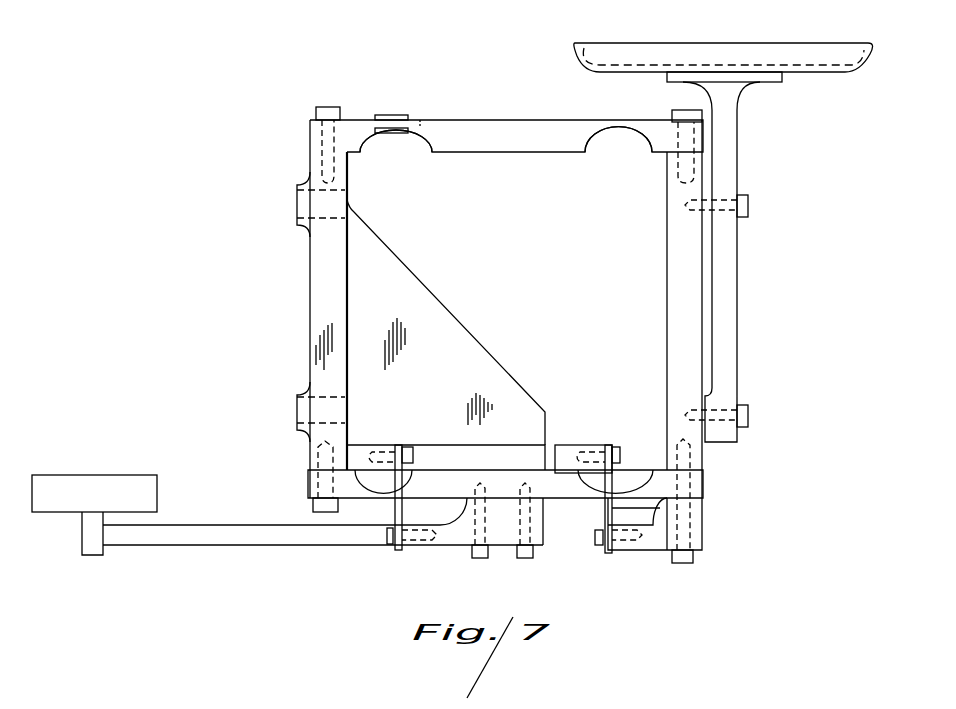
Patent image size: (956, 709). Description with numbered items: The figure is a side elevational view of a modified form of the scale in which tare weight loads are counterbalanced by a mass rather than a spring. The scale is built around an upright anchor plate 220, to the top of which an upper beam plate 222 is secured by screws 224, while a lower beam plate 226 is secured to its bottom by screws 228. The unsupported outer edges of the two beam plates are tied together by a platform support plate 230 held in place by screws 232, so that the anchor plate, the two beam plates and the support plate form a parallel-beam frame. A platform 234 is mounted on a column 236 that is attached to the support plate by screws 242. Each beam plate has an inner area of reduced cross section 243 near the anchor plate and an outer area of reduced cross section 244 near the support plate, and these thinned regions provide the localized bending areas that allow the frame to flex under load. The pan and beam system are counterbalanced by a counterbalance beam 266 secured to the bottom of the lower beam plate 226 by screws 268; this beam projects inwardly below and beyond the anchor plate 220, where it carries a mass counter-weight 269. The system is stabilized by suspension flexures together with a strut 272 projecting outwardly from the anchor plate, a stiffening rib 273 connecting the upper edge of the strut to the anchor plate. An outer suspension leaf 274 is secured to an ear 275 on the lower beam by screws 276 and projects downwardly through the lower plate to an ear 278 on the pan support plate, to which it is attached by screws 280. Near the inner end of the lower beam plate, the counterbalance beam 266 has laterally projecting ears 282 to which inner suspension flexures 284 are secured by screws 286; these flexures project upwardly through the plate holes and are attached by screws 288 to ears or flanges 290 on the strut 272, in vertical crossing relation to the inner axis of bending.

The anchor plate 220 is at (323, 288).
The upper beam plate 222 is at (497, 132).
The screws 224 is at (318, 106).
The lower beam plate 226 is at (578, 500).
The screws 228 is at (315, 507).
The platform support plate 230 is at (675, 292).
The screws 232 is at (672, 115).
The platform 234 is at (708, 53).
The column 236 is at (728, 298).
The screws 242 is at (750, 205).
The inner area of reduced cross section 243 is at (428, 147).
The outer area of reduced cross section 244 is at (648, 140).
The counterbalance beam 266 is at (217, 538).
The screws 268 is at (523, 560).
The mass counter-weight 269 is at (87, 483).
The strut 272 is at (502, 453).
The stiffening rib 273 is at (462, 368).
The outer suspension leaf 274 is at (612, 508).
The ear 275 is at (563, 452).
The screws 276 is at (620, 446).
The ear 278 is at (633, 552).
The screws 280 is at (599, 547).
The ears 282 is at (425, 547).
The inner suspension flexures 284 is at (397, 475).
The screws 286 is at (389, 546).
The screws 288 is at (410, 447).
The ears or flanges 290 is at (358, 452).